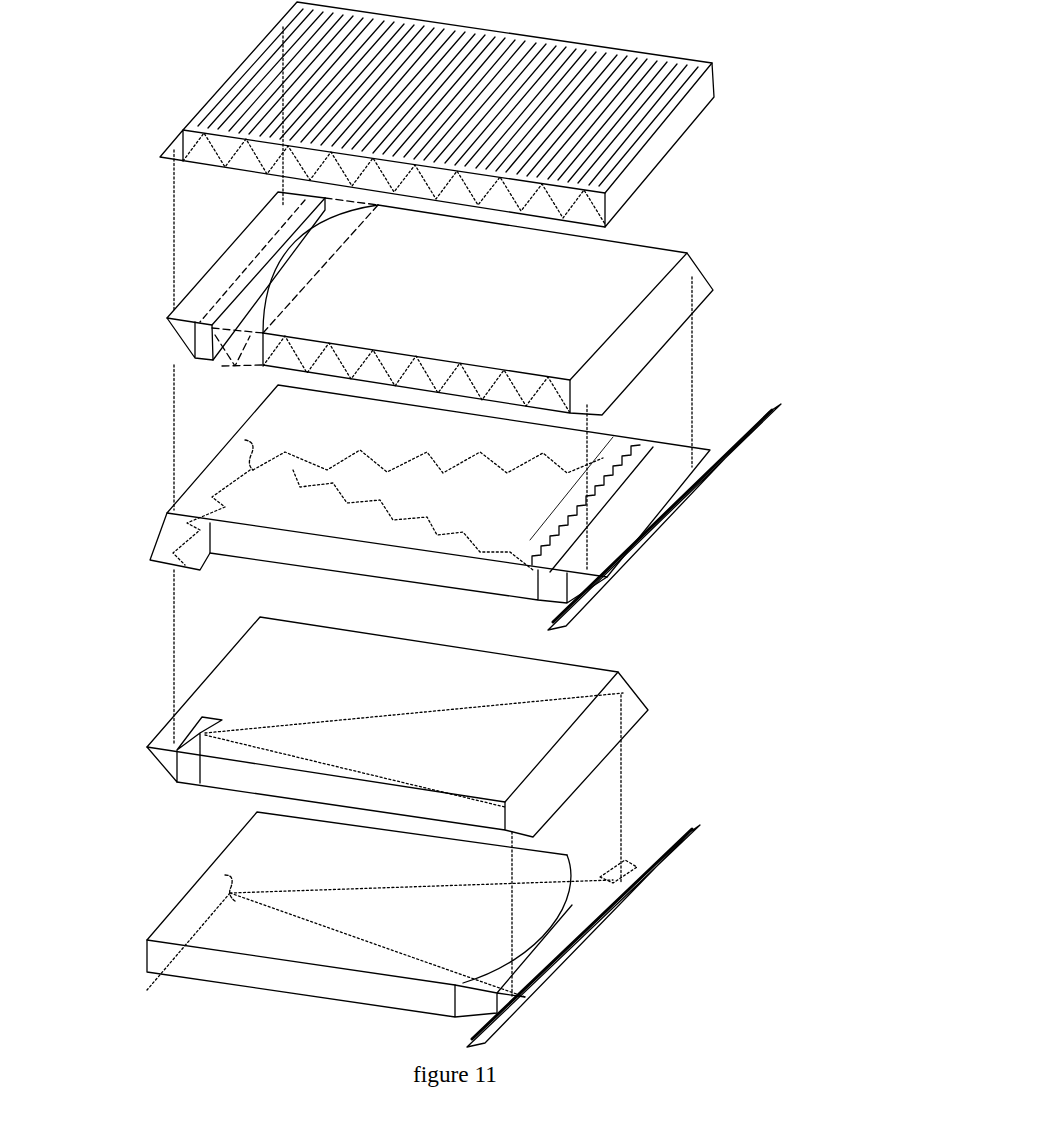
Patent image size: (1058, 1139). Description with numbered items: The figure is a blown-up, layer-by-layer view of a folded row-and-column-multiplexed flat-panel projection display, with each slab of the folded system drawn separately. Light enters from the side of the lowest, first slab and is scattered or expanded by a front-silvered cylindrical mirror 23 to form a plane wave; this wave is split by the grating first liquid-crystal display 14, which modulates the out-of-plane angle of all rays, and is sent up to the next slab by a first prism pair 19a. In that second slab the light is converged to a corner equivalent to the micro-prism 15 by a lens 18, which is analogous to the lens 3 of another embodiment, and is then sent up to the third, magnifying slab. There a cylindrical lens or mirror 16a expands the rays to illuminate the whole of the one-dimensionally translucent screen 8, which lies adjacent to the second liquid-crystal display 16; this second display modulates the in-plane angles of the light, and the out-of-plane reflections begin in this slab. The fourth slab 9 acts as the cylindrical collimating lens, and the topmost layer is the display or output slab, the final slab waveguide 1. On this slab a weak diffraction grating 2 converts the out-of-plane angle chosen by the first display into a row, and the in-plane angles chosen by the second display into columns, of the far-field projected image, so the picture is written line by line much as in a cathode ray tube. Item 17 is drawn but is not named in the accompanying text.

The final slab waveguide 1 is at (708, 112).
The weak diffraction grating 2 is at (600, 57).
The lens 3 is at (265, 273).
The one-dimensionally translucent screen 8 is at (655, 430).
The fourth slab 9 is at (645, 252).
The first liquid-crystal display 14 is at (680, 880).
The micro-prism 15 is at (163, 587).
The second liquid-crystal display 16 is at (777, 442).
The cylindrical lens or mirror 16a is at (221, 446).
The base plate 17 is at (459, 1032).
The lens 18 is at (214, 750).
The first prism pair 19a is at (632, 846).
The front-silvered cylindrical mirror 23 is at (204, 886).